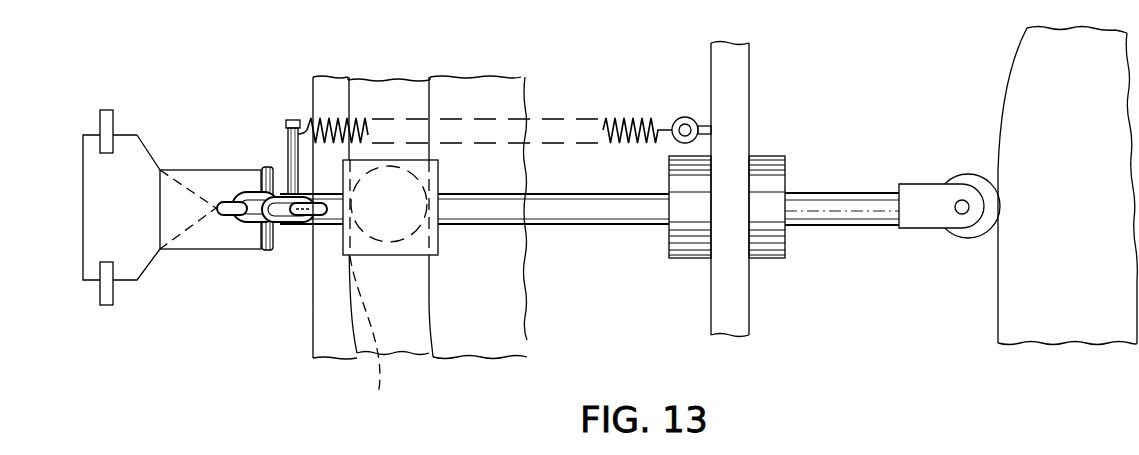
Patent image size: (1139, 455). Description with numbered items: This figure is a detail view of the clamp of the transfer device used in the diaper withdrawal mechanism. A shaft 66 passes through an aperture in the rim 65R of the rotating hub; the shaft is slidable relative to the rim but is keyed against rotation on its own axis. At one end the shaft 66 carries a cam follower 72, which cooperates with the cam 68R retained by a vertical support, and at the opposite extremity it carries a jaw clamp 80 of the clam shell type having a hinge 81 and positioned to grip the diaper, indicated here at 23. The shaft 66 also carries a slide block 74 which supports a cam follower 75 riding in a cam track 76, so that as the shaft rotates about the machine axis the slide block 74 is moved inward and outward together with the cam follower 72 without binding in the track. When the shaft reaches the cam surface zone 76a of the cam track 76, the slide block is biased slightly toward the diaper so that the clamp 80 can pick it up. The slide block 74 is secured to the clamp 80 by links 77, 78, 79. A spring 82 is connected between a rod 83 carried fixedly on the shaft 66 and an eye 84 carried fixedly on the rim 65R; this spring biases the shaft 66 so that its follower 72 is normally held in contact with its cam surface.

The hitch bracket 23 is at (124, 218).
The jaw clamp 80 is at (202, 176).
The link 79 is at (228, 201).
The hinge 81 is at (268, 250).
The link 78 is at (287, 228).
The link 77 is at (313, 226).
The rod 83 is at (287, 145).
The spring 82 is at (633, 117).
The eye 84 is at (687, 117).
The cam track 76 is at (392, 92).
The cam surface zone 76a is at (433, 333).
The slide block 74 is at (412, 254).
The cam follower 75 is at (365, 337).
The rim 65R is at (749, 87).
The shaft 66 is at (810, 193).
The cam follower 72 is at (963, 176).
The cam 68R is at (1137, 454).